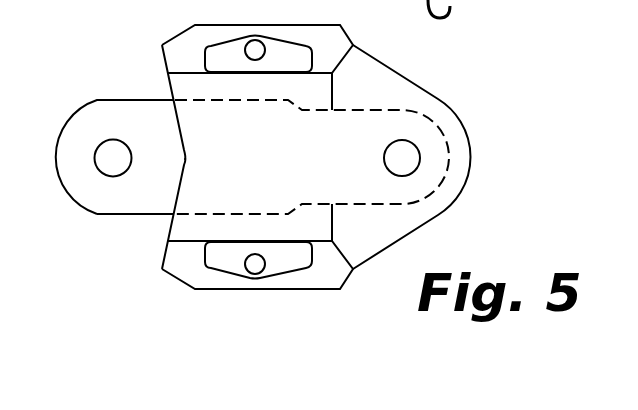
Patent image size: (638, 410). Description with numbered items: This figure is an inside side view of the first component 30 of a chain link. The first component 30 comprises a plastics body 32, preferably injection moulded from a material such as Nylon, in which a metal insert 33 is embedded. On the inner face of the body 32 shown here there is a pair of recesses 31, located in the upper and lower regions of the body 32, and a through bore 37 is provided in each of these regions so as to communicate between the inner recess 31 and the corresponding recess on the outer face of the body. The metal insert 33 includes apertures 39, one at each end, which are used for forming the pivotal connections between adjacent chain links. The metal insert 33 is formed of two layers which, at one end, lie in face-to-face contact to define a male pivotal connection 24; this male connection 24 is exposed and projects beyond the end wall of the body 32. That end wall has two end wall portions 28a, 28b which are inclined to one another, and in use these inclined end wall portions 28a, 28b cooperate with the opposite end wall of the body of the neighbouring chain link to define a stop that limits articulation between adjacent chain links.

The male pivotal connection 24 is at (78, 128).
The end wall portion 28a is at (167, 78).
The end wall portion 28b is at (167, 230).
The first component 30 is at (428, 225).
The recess 31 is at (285, 53).
The plastics body 32 is at (368, 85).
The metal insert 33 is at (94, 214).
The through bore 37 is at (255, 55).
The aperture 39 is at (105, 167).